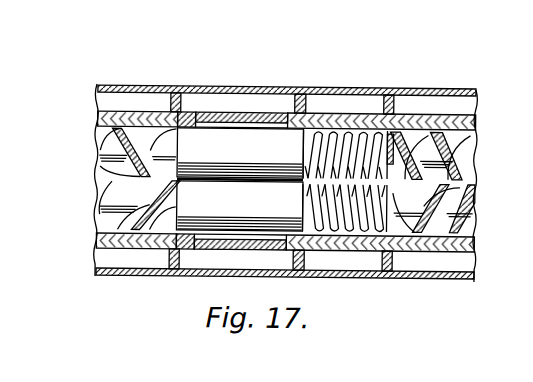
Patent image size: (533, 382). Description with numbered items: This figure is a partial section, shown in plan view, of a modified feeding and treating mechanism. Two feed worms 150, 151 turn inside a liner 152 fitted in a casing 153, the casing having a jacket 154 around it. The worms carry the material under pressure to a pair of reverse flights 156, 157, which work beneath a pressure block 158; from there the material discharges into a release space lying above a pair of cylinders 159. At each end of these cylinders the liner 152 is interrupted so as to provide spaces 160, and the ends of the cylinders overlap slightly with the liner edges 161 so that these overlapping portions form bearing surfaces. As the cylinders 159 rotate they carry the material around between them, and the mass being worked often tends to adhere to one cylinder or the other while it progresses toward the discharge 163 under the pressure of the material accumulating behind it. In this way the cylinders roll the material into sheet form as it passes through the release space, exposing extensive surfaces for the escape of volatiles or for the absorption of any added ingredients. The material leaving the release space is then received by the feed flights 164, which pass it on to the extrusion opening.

The feed worm 150 is at (480, 152).
The feed worm 151 is at (460, 203).
The liner 152 is at (123, 118).
The casing 153 is at (473, 249).
The jacket 154 is at (443, 271).
The reverse flight 156 is at (350, 128).
The reverse flight 157 is at (352, 229).
The pressure block 158 is at (240, 154).
The cylinder 159 is at (239, 206).
The space 160 is at (213, 127).
The liner edge 161 is at (190, 120).
The discharge 163 is at (130, 223).
The feed flight 164 is at (97, 197).